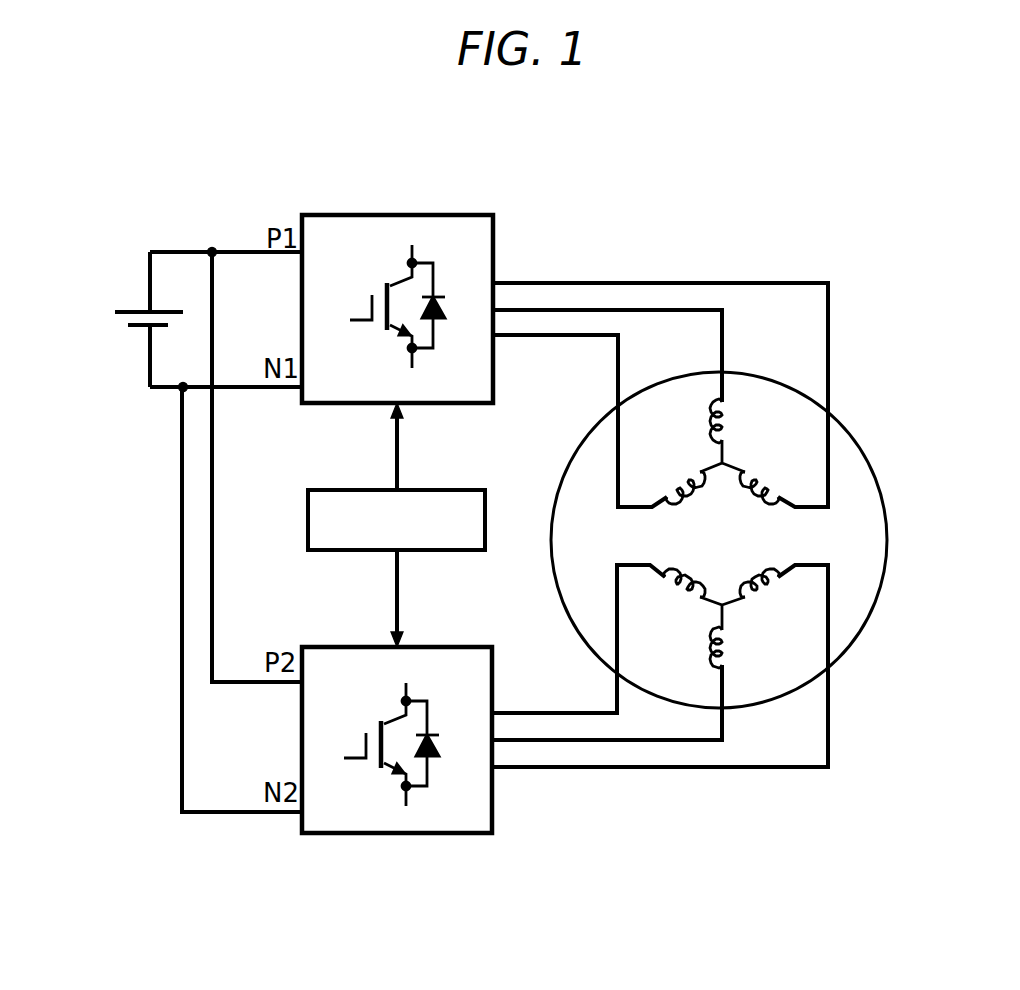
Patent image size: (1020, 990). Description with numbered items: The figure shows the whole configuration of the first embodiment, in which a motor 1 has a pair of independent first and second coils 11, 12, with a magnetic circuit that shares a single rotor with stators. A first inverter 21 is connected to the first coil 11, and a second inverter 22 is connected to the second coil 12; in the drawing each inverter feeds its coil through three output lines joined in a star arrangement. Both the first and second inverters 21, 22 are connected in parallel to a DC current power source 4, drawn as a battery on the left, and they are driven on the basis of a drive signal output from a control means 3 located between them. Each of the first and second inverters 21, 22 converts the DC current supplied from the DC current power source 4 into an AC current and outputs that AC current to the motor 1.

The motor 1 is at (868, 465).
The control means 3 is at (485, 500).
The DC current power source 4 is at (135, 310).
The first coil 11 is at (727, 402).
The second coil 12 is at (727, 668).
The first inverter 21 is at (495, 245).
The second inverter 22 is at (492, 785).